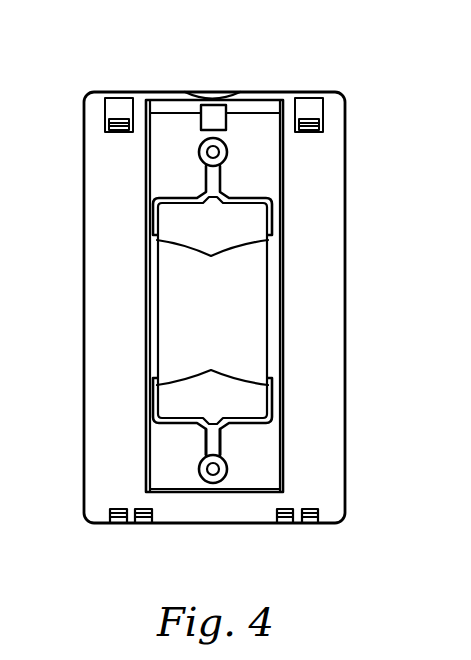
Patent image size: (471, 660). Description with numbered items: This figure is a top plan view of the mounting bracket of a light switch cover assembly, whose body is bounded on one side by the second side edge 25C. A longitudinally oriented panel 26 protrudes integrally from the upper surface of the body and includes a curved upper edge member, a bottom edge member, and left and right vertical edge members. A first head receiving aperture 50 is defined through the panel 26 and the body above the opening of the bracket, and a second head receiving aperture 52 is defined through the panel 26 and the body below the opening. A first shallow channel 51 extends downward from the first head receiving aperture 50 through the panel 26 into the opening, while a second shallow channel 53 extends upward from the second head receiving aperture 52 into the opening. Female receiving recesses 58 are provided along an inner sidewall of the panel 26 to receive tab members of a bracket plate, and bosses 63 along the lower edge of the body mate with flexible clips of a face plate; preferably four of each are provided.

The second side edge 25C is at (84, 212).
The longitudinally oriented panel 26 is at (249, 132).
The first head receiving aperture 50 is at (204, 141).
The first shallow channel 51 is at (215, 178).
The second head receiving aperture 52 is at (210, 478).
The second shallow channel 53 is at (213, 445).
The female receiving recess 58 is at (210, 258).
The boss 63 is at (115, 524).